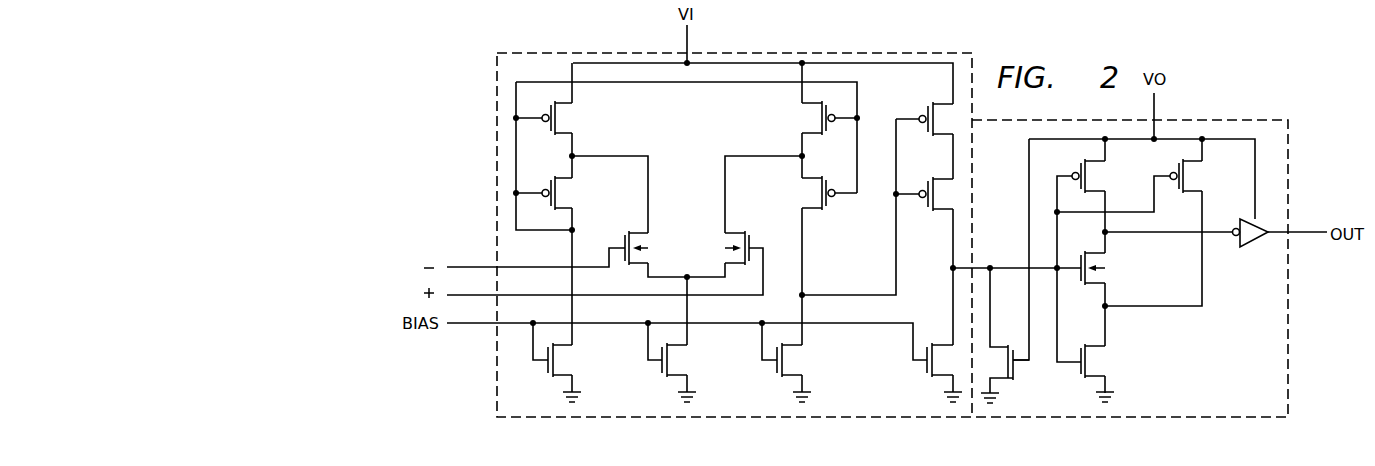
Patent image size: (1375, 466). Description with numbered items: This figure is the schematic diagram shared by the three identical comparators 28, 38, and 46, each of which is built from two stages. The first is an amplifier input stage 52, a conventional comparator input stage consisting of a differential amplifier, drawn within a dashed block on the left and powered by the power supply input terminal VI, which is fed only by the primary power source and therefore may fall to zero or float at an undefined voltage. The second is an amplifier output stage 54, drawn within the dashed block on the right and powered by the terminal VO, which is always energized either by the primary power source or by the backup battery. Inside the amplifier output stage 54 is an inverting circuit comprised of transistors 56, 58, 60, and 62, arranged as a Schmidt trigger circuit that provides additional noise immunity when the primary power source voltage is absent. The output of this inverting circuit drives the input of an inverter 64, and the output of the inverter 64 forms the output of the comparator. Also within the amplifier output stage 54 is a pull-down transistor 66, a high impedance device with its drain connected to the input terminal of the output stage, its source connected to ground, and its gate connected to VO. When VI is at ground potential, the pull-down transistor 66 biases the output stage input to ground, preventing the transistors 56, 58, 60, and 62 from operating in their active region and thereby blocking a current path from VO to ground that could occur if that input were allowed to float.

The comparator 28 is at (488, 10).
The comparator 38 is at (482, 30).
The comparator 46 is at (476, 57).
The amplifier input stage 52 is at (945, 52).
The amplifier output stage 54 is at (1252, 121).
The transistor 56 is at (1095, 366).
The transistor 58 is at (1107, 271).
The transistor 60 is at (1095, 179).
The transistor 62 is at (1192, 178).
The inverter 64 is at (1250, 247).
The pull-down transistor 66 is at (1000, 378).